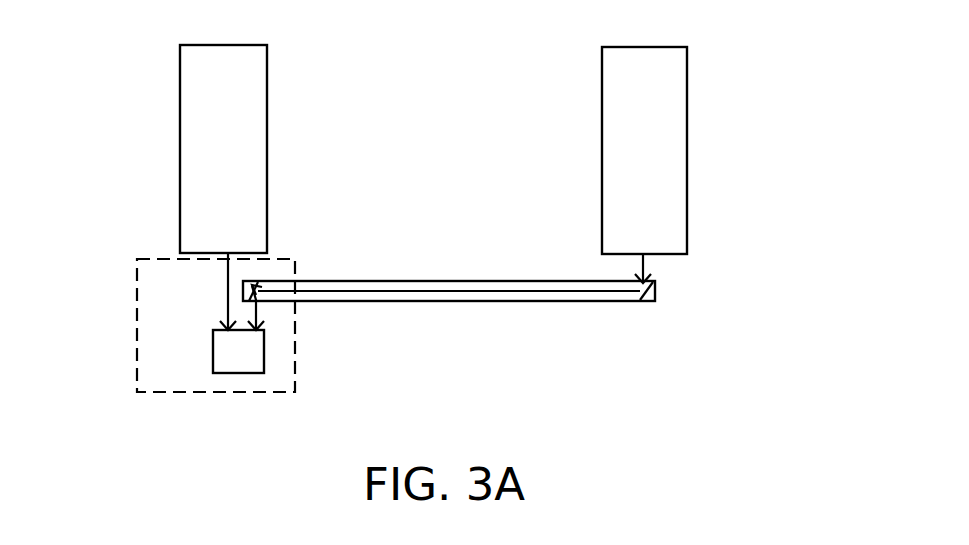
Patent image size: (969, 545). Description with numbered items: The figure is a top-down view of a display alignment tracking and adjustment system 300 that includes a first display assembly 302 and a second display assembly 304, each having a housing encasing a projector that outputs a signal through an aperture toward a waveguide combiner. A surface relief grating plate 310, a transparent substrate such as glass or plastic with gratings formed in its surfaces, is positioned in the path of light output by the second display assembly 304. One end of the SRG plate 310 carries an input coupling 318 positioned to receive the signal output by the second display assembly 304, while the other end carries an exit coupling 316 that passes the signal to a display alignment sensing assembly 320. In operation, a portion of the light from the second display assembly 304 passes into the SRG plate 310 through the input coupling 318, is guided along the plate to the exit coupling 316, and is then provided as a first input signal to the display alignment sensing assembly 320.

The display alignment tracking and adjustment system 300 is at (735, 132).
The first display assembly 302 is at (248, 147).
The second display assembly 304 is at (660, 152).
The surface relief grating (SRG) plate 310 is at (443, 281).
The exit coupling 316 is at (241, 301).
The input coupling 318 is at (657, 302).
The display alignment sensing assembly 320 is at (135, 342).